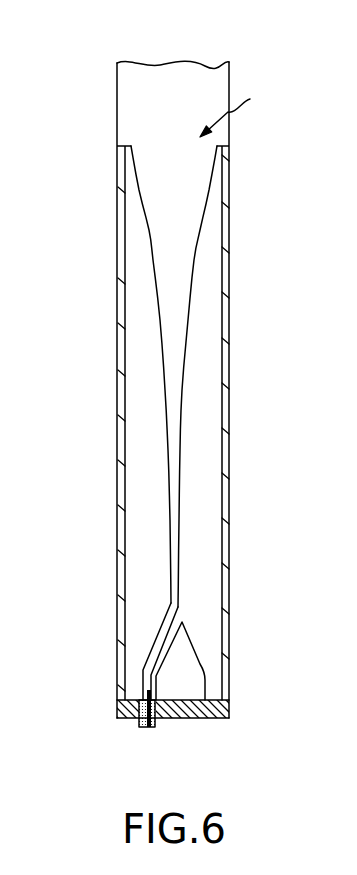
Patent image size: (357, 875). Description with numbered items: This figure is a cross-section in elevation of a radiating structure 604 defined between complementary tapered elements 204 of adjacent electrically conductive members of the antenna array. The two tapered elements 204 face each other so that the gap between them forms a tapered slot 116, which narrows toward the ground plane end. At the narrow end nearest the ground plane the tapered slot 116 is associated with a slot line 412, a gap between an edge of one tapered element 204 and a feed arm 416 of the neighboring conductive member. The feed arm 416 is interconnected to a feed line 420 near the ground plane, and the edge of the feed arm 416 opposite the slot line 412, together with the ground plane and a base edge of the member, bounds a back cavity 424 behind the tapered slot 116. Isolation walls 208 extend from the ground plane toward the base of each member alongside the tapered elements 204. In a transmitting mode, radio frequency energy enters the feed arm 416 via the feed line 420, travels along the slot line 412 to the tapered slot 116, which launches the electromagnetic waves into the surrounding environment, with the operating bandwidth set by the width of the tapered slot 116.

The tapered slot 116 is at (173, 117).
The radiating structure 604 is at (241, 105).
The isolation wall 208 is at (150, 234).
The tapered element 204 is at (205, 293).
The slot line 412 is at (167, 626).
The feed arm 416 is at (160, 653).
The feed line 420 is at (138, 708).
The back cavity 424 is at (183, 683).